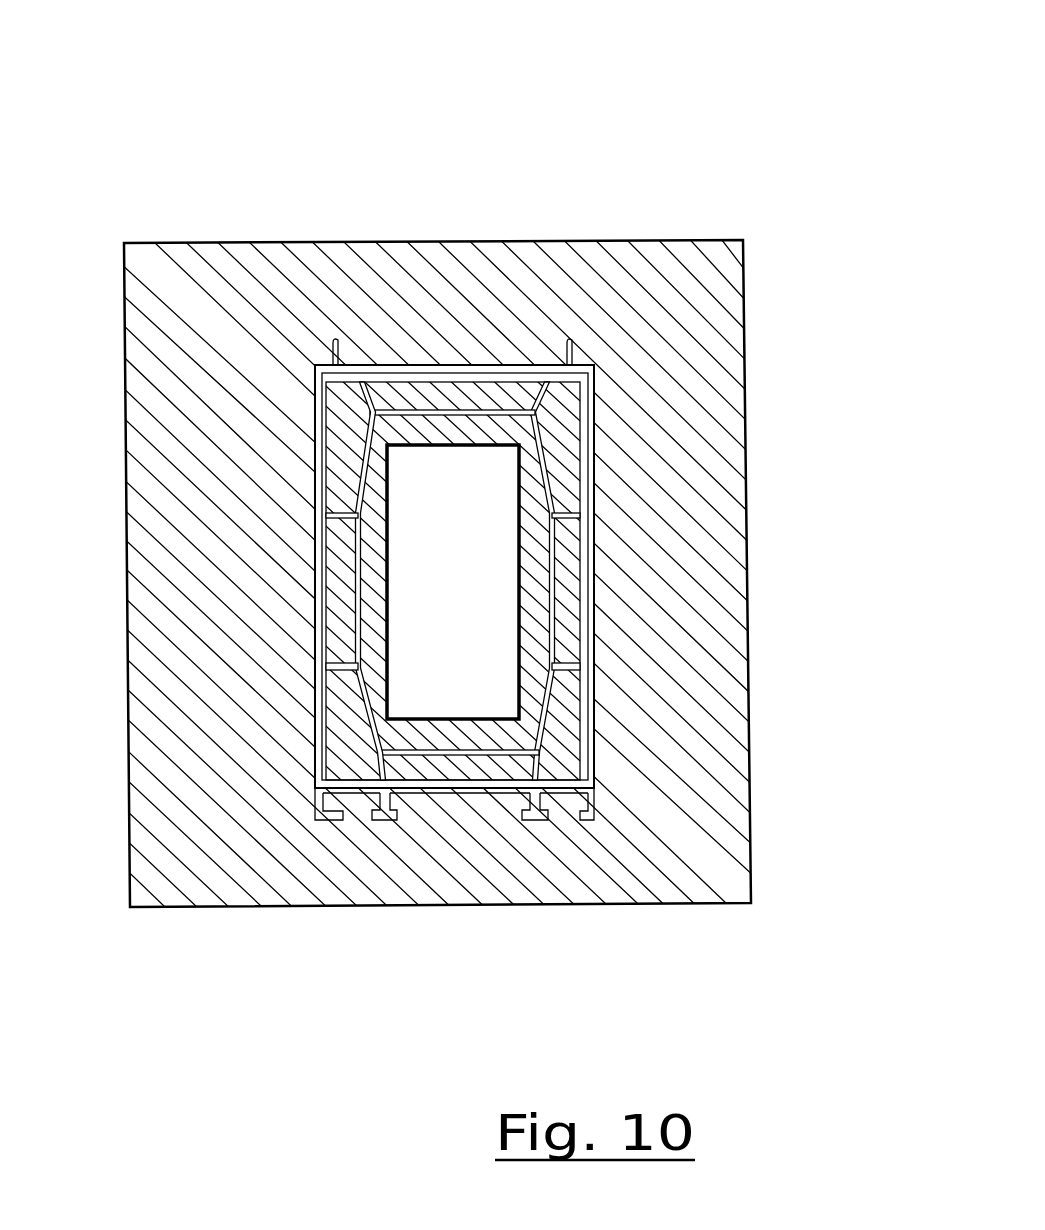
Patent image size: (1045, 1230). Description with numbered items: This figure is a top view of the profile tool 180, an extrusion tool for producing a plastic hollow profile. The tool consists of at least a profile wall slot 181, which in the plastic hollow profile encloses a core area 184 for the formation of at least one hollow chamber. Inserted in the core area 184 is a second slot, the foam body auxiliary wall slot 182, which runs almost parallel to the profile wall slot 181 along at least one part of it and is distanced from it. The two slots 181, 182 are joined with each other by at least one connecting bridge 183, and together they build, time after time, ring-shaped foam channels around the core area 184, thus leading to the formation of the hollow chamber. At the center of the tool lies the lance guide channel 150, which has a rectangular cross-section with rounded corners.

The profile tool 180 is at (246, 159).
The profile wall slot 181 is at (583, 455).
The foam body auxiliary wall slot 182 is at (553, 580).
The connecting bridge 183 is at (592, 745).
The core area 184 is at (372, 587).
The lance guide channel 150 is at (453, 582).